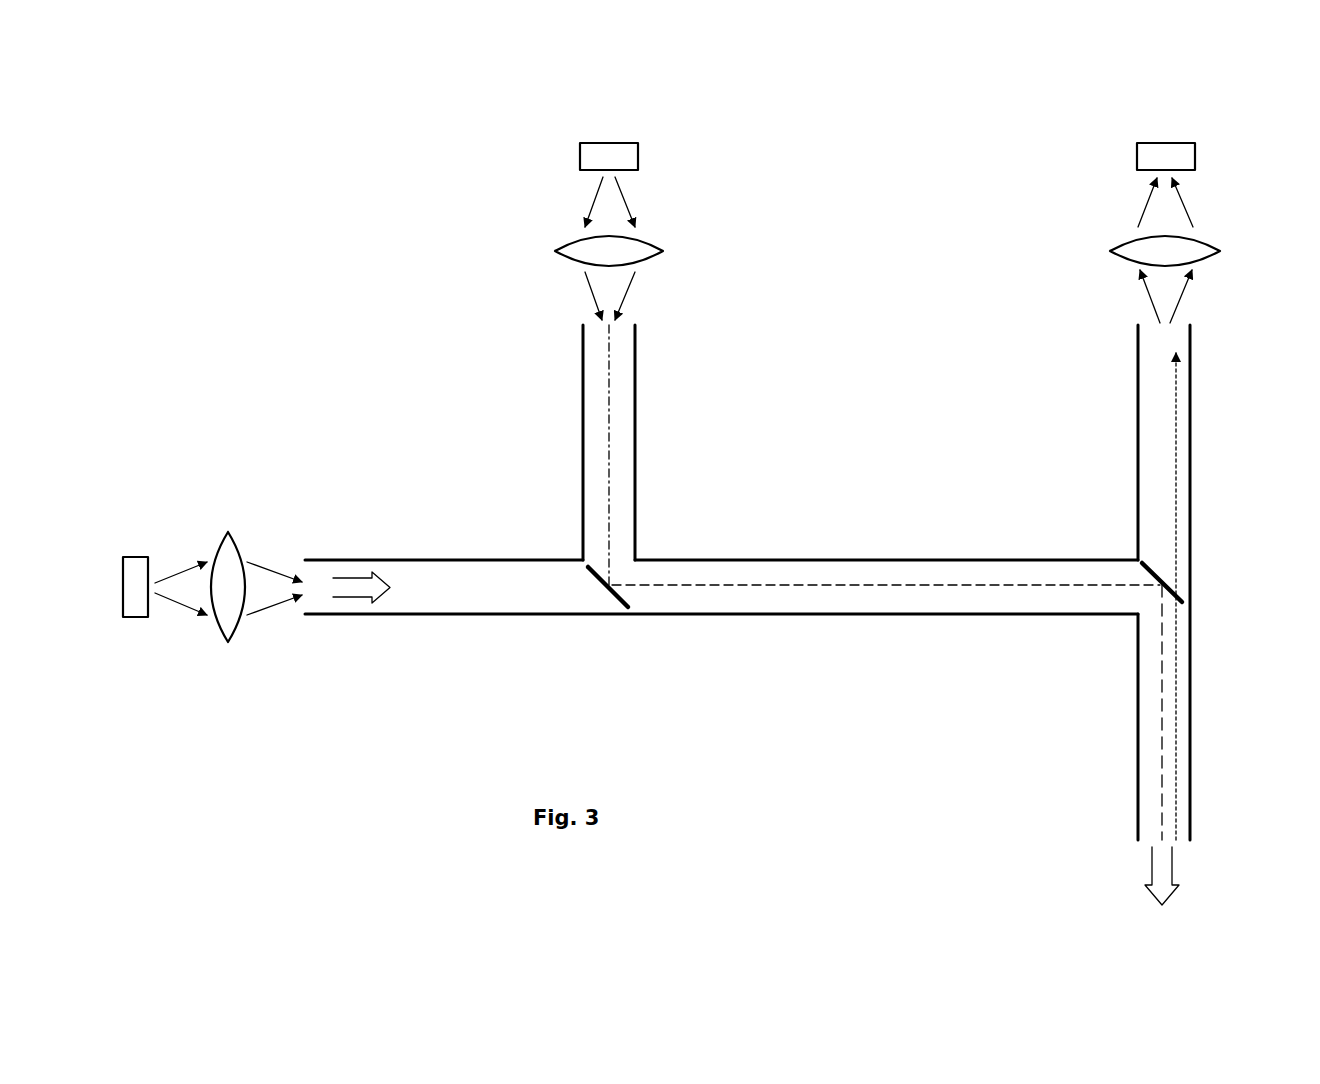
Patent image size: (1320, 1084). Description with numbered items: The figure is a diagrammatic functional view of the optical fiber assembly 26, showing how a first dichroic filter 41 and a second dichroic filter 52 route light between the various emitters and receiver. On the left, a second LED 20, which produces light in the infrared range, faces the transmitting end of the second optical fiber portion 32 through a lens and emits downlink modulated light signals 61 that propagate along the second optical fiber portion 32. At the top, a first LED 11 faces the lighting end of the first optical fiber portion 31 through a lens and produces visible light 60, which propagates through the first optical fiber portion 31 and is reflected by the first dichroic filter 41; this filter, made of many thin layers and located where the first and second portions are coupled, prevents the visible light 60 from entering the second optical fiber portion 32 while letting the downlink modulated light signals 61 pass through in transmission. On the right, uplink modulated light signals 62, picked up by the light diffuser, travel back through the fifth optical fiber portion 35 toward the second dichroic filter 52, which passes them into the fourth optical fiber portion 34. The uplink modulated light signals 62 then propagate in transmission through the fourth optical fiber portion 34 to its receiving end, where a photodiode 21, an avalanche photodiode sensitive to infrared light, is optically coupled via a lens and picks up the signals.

The first light-emitting diode 11 is at (610, 152).
The second LED 20 is at (137, 566).
The photodiode 21 is at (1162, 152).
The optical fiber assembly 26 is at (903, 652).
The first optical fiber portion 31 is at (622, 410).
The second optical fiber portion 32 is at (450, 577).
The fourth optical fiber portion 34 is at (1155, 443).
The fifth optical fiber portion 35 is at (1182, 710).
The first dichroic filter 41 is at (607, 603).
The second dichroic filter 52 is at (1185, 578).
The visible light 60 is at (612, 475).
The downlink modulated light signals 61 is at (352, 592).
The uplink modulated light signals 62 is at (1178, 445).